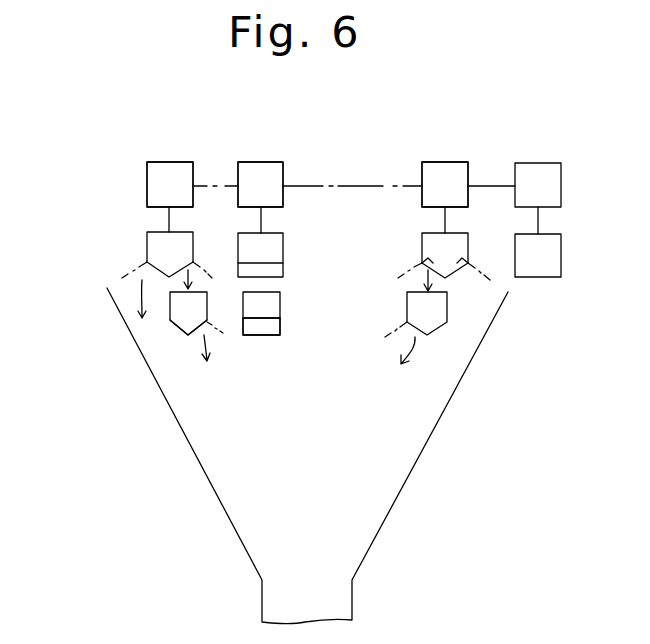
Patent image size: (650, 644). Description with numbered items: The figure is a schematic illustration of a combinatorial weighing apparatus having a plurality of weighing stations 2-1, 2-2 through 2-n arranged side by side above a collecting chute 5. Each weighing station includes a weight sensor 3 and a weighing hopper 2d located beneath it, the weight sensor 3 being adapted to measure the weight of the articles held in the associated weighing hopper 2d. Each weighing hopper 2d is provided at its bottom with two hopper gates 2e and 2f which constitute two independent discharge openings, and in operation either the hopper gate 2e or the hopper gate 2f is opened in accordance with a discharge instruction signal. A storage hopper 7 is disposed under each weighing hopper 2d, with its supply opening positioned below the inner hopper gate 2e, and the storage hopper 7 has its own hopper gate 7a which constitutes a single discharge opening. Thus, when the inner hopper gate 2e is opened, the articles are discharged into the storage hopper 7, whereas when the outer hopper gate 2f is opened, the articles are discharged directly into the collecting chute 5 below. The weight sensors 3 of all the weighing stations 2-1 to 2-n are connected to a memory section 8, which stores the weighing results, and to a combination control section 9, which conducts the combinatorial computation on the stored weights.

The weighing station 2-1 is at (172, 134).
The weighing station 2-2 is at (267, 134).
The weighing station 2-n is at (457, 129).
The weight sensor 3 is at (173, 170).
The weighing hopper 2d is at (175, 237).
The hopper gate 2e is at (190, 267).
The hopper gate 2f is at (147, 267).
The storage hopper 7 is at (198, 302).
The hopper gate 7a is at (197, 338).
The memory section 8 is at (538, 185).
The combination control section 9 is at (538, 255).
The collecting chute 5 is at (200, 465).